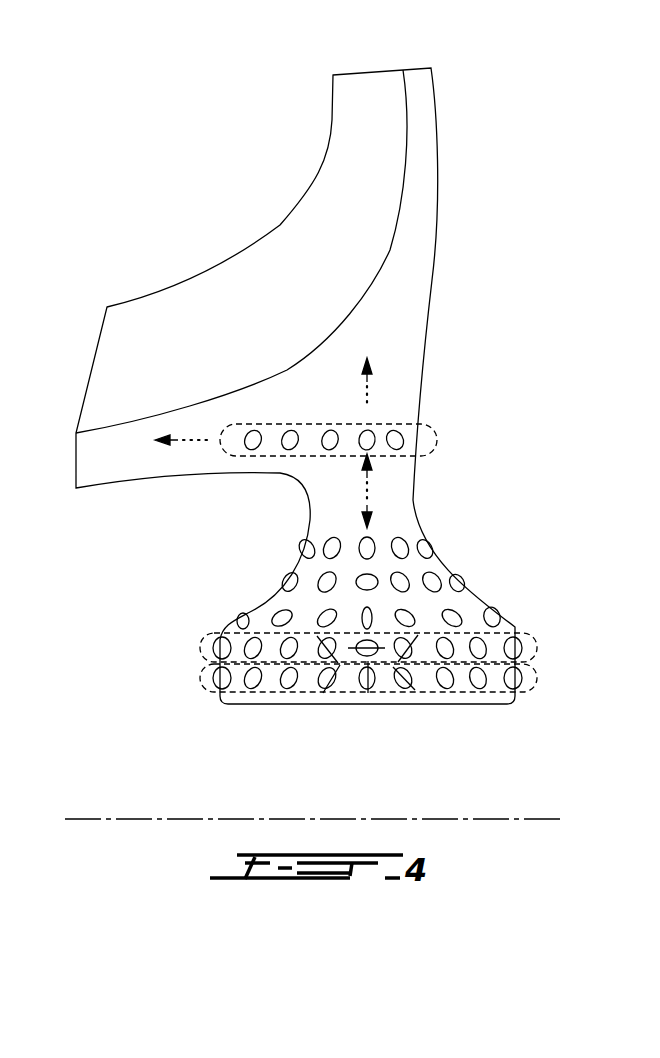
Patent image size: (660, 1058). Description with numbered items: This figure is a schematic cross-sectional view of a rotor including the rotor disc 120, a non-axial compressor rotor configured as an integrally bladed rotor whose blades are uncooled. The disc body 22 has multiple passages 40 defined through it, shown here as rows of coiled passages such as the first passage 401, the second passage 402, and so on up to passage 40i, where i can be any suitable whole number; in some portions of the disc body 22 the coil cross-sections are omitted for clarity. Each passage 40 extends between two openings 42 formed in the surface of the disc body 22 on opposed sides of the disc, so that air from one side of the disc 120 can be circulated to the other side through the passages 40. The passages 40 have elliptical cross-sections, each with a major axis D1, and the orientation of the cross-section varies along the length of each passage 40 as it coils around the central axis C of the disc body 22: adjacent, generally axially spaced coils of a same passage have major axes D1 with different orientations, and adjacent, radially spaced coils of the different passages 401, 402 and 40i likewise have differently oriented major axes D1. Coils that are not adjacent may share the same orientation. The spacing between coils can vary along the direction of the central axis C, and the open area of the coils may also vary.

The rotor disc 120 is at (313, 386).
The disc body 22 is at (440, 190).
The passages 40 is at (473, 630).
The passage 40i is at (387, 424).
The first passage 401 is at (388, 692).
The second passage 402 is at (425, 692).
The openings 42 is at (240, 619).
The major axis D1 is at (317, 636).
The central axis C is at (537, 817).